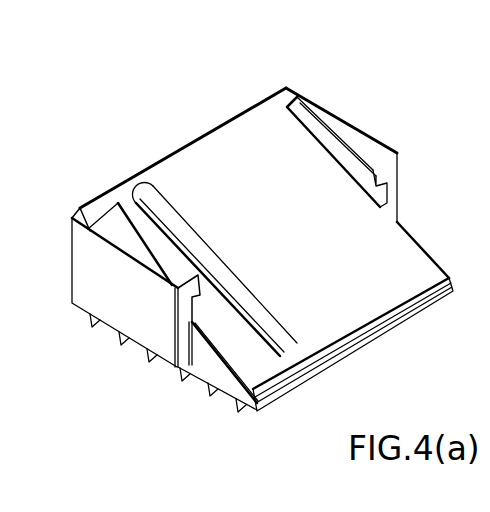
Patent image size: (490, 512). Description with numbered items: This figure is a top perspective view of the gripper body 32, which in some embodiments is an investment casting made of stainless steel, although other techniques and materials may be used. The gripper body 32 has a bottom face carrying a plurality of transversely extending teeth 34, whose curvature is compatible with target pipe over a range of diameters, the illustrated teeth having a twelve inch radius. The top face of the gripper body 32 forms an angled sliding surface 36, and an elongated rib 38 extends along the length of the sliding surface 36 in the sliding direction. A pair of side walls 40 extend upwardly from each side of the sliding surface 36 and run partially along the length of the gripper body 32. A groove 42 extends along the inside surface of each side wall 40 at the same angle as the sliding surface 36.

The gripper body 32 is at (42, 152).
The teeth 34 is at (126, 349).
The angled sliding surface 36 is at (245, 167).
The elongated rib 38 is at (288, 343).
The side wall 40 is at (92, 284).
The groove 42 is at (343, 160).